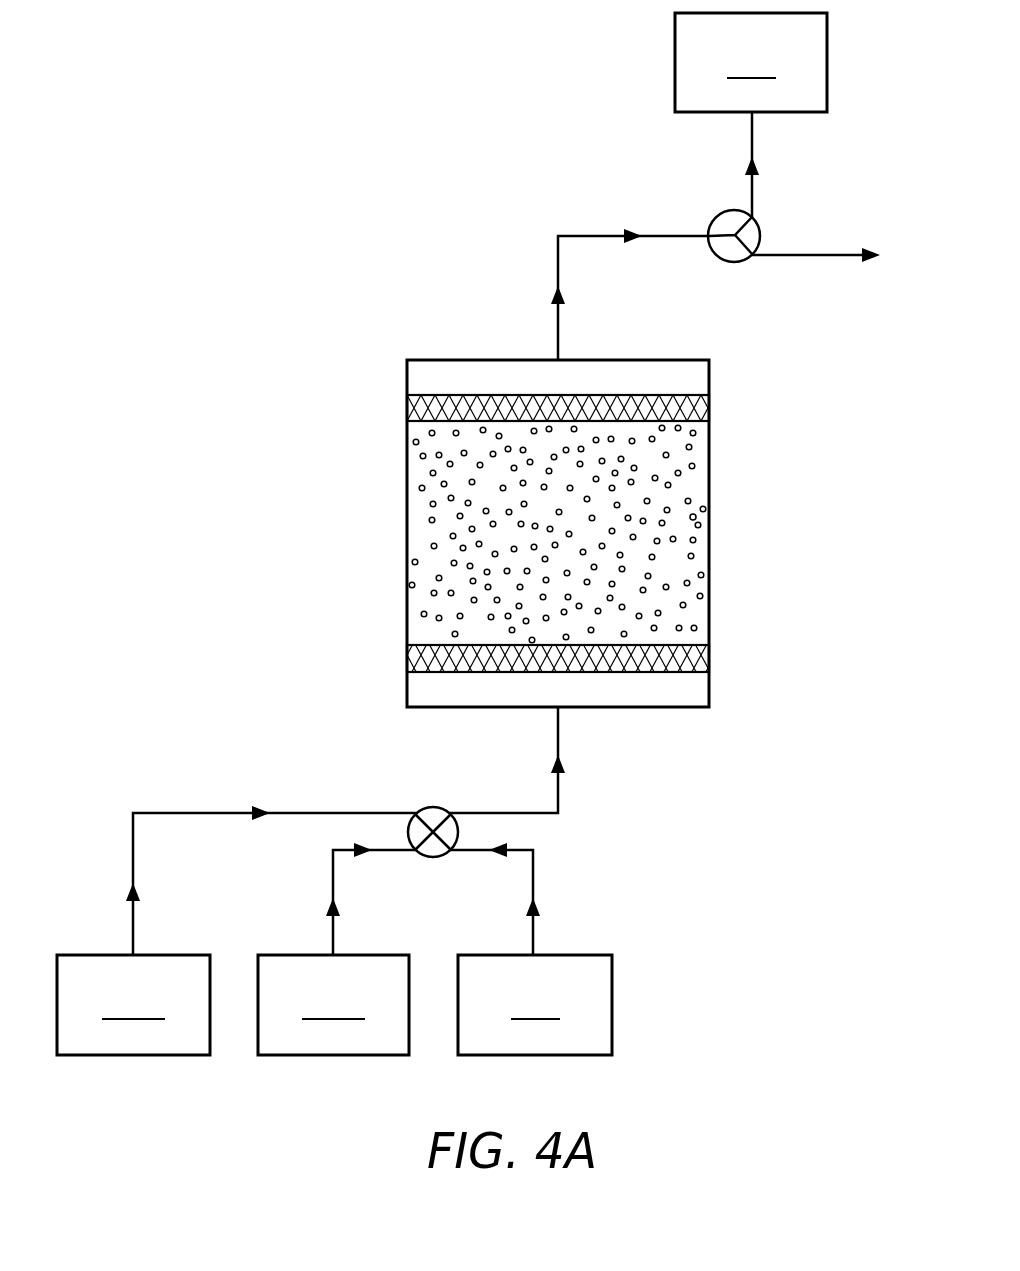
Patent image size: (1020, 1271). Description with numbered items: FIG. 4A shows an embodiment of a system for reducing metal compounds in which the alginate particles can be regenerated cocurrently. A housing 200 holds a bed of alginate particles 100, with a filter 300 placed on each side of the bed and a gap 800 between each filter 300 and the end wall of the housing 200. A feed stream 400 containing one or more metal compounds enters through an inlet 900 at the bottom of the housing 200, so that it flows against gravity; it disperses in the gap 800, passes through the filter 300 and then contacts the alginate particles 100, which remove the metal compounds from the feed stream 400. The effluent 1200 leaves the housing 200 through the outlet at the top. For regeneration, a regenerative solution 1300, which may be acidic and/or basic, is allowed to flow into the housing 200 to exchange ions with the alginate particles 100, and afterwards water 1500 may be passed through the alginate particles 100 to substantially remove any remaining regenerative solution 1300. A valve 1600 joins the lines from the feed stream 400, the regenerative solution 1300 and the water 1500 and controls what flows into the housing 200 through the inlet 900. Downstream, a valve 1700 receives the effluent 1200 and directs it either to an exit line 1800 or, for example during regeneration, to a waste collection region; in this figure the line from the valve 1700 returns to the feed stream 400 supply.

The alginate particles 100 is at (696, 518).
The housing 200 is at (711, 452).
The filter 300 is at (711, 405).
The feed stream 400 is at (638, 534).
The gap 800 is at (711, 371).
The inlet 900 is at (560, 712).
The effluent 1200 is at (556, 266).
The regenerative solution 1300 is at (337, 949).
The water 1500 is at (237, 930).
The valve 1600 is at (428, 858).
The valve 1700 is at (754, 218).
The exit line 1800 is at (832, 257).